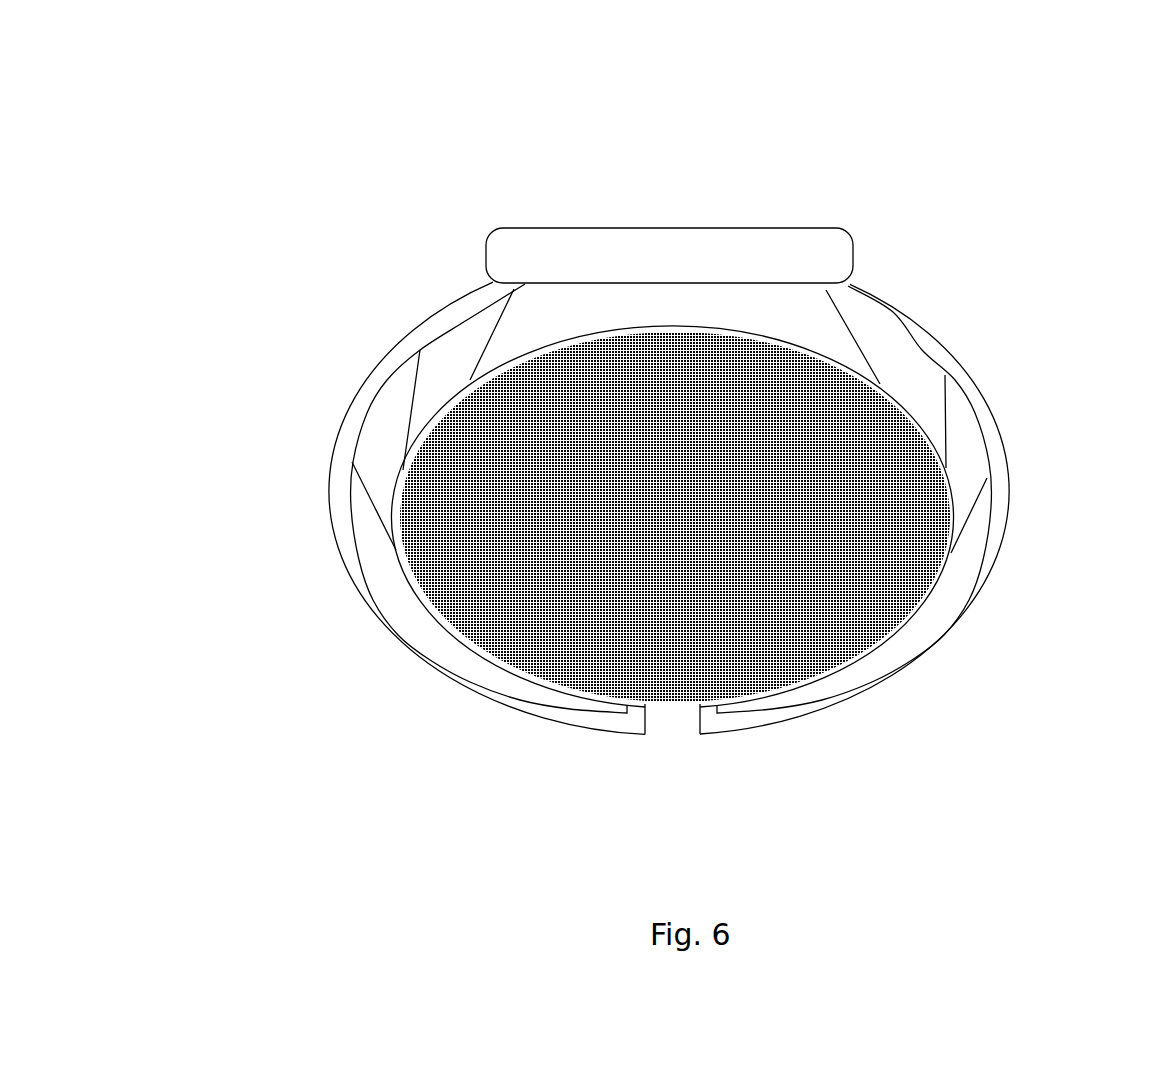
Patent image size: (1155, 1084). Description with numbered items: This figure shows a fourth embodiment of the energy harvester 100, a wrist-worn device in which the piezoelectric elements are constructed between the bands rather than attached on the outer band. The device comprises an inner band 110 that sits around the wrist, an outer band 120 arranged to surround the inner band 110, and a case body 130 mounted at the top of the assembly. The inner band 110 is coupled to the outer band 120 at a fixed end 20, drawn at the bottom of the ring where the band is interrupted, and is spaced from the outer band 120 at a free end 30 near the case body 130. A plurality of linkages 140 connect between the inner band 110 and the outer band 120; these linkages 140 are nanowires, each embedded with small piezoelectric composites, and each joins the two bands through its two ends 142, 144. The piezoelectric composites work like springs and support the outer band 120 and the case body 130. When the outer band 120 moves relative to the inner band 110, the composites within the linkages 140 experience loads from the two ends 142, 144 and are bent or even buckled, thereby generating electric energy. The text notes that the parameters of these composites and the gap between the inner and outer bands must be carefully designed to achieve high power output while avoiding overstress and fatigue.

The energy harvester 100 is at (1038, 95).
The fixed end 20 is at (684, 746).
The free end 30 is at (720, 296).
The inner band 110 is at (937, 570).
The outer band 120 is at (711, 450).
The case body 130 is at (493, 233).
The linkages 140 is at (665, 483).
The first end of linkage 142 is at (342, 484).
The second end of linkage 144 is at (380, 553).